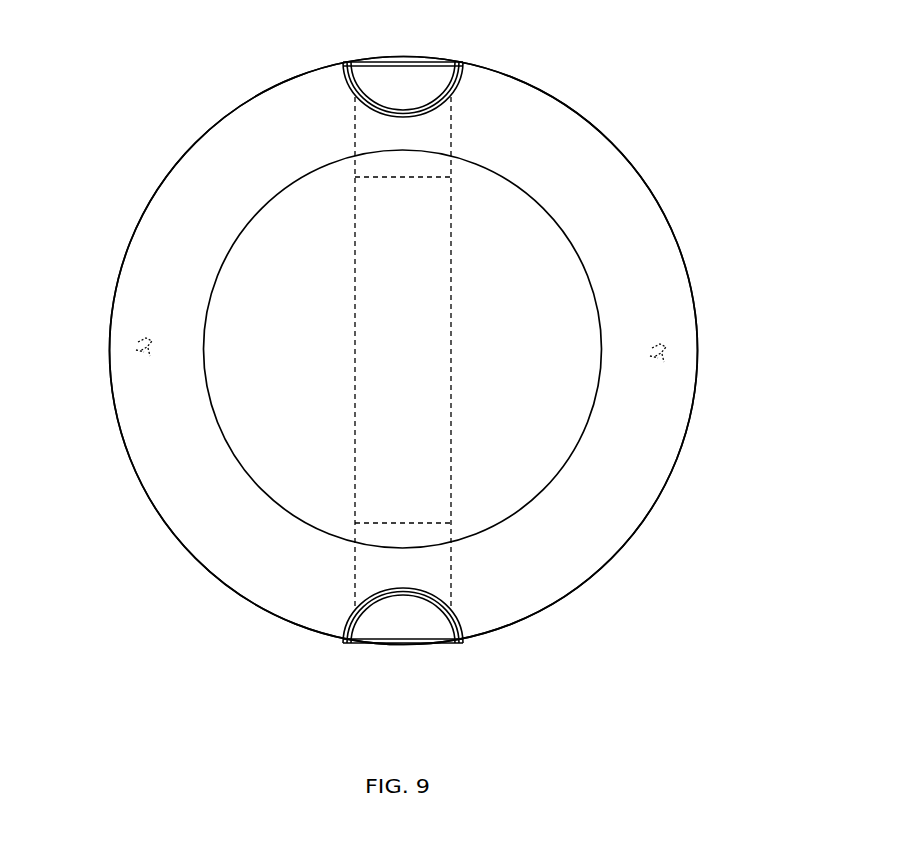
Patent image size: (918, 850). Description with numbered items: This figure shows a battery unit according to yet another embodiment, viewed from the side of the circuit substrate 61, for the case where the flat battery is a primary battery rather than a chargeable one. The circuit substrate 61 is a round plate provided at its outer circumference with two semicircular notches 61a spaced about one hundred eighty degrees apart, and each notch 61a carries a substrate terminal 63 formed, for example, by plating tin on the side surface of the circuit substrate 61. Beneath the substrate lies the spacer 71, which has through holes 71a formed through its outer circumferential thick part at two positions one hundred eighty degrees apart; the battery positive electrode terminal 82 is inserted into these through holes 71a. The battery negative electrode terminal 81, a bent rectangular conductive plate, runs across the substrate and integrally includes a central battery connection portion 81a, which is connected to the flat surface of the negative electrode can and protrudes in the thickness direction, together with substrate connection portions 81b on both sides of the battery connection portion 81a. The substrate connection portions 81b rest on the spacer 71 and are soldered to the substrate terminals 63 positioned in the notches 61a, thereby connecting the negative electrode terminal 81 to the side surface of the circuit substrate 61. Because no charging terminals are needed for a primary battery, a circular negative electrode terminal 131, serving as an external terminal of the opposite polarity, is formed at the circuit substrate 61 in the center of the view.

The circuit substrate 61 is at (520, 95).
The notches 61a is at (453, 84).
The substrate terminal 63 is at (440, 60).
The spacer 71 is at (238, 118).
The through holes 71a is at (123, 347).
The battery negative electrode terminal 81 is at (412, 352).
The battery connection portion 81a is at (432, 223).
The substrate connection portions 81b is at (370, 126).
The battery positive electrode terminal 82 is at (133, 358).
The circular negative electrode terminal 131 is at (277, 475).